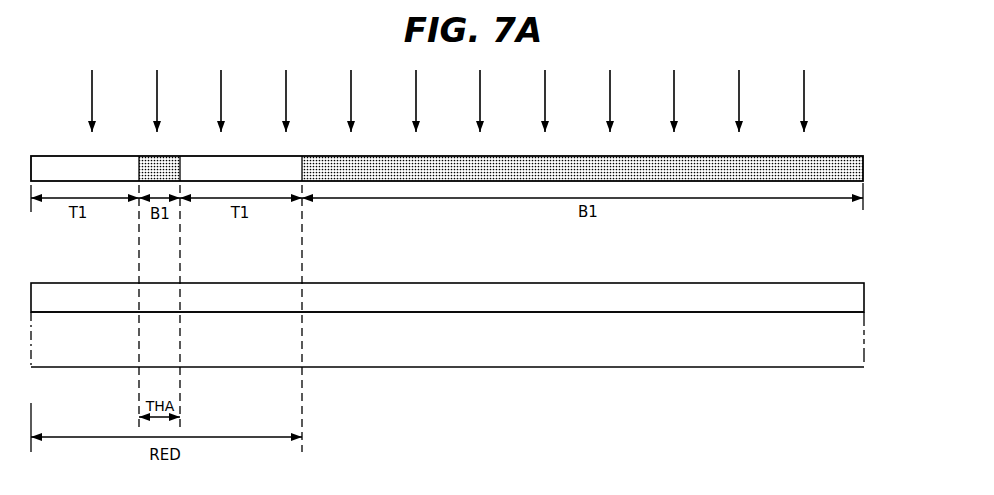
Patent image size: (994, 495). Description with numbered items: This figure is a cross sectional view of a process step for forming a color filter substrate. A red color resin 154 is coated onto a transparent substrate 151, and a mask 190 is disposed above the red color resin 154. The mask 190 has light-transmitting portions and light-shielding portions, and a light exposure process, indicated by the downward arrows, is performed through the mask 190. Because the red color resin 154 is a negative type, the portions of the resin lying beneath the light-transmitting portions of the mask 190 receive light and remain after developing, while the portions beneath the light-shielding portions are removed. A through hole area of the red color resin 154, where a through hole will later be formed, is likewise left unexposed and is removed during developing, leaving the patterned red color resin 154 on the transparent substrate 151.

The mask 190 is at (855, 145).
The red (R) color resin 154 is at (838, 302).
The transparent substrate 151 is at (488, 348).